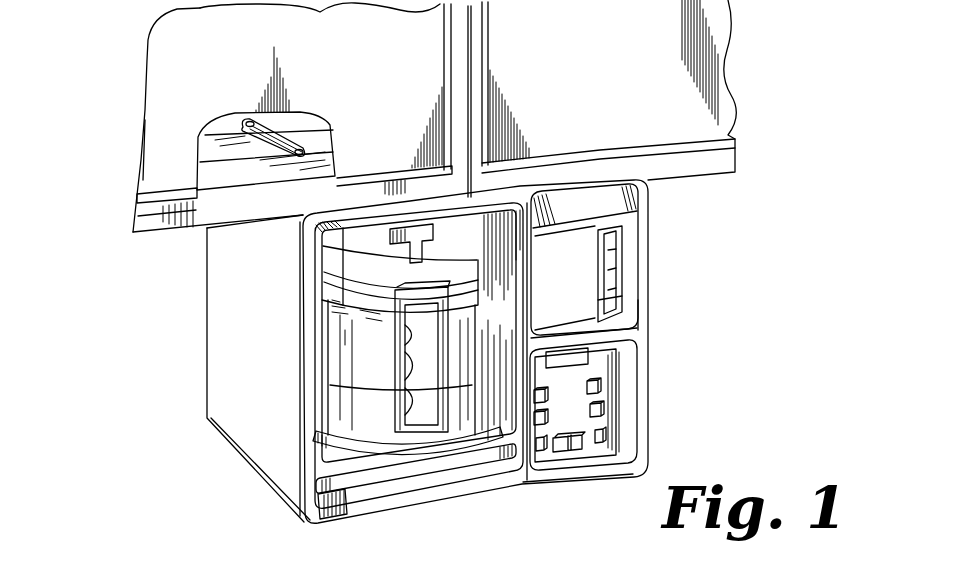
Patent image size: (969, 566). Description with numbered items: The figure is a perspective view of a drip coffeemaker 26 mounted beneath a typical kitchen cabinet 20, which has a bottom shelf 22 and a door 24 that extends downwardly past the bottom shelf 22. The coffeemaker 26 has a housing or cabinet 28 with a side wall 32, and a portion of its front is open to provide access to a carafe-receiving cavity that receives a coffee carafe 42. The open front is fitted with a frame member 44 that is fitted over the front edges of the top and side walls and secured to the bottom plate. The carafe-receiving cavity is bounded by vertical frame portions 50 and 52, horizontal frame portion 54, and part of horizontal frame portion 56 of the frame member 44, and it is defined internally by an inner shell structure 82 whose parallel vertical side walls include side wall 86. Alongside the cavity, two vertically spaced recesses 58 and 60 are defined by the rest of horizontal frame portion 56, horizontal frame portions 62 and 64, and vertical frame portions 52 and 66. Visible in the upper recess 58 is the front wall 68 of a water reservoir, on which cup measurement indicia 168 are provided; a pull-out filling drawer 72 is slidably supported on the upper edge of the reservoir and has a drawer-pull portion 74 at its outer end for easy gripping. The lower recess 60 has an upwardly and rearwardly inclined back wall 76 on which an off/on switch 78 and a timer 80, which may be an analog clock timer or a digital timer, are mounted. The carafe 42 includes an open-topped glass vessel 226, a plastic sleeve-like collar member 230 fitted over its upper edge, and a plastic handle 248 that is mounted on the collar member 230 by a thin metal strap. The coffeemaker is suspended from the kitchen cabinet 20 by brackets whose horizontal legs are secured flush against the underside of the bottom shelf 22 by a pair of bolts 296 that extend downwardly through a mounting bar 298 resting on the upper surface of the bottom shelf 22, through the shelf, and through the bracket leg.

The kitchen cabinet 20 is at (143, 83).
The bottom shelf 22 is at (220, 173).
The door 24 is at (143, 112).
The drip coffeemaker 26 is at (675, 297).
The housing or cabinet 28 is at (232, 450).
The side wall 32 is at (235, 348).
The coffee carafe 42 is at (330, 497).
The frame member 44 is at (305, 290).
The vertical frame portion 50 is at (330, 385).
The vertical frame portion 52 is at (531, 258).
The horizontal frame portion 54 is at (347, 487).
The horizontal frame portion 56 is at (353, 217).
The upper recess 58 is at (628, 258).
The lower recess 60 is at (632, 378).
The horizontal frame portion 62 is at (625, 343).
The horizontal frame portion 64 is at (600, 472).
The vertical frame portion 66 is at (650, 325).
The front wall 68 is at (574, 296).
The pull-out filling drawer 72 is at (647, 197).
The drawer-pull portion 74 is at (610, 204).
The back wall 76 is at (608, 400).
The off/on switch 78 is at (560, 443).
The timer 80 is at (570, 363).
The inner shell structure 82 is at (497, 242).
The vertical side wall 86 is at (512, 303).
The cup measurement indicia 168 is at (602, 308).
The glass vessel 226 is at (320, 430).
The collar member 230 is at (340, 258).
The handle 248 is at (420, 385).
The bolts 296 is at (300, 140).
The mounting bar 298 is at (300, 120).